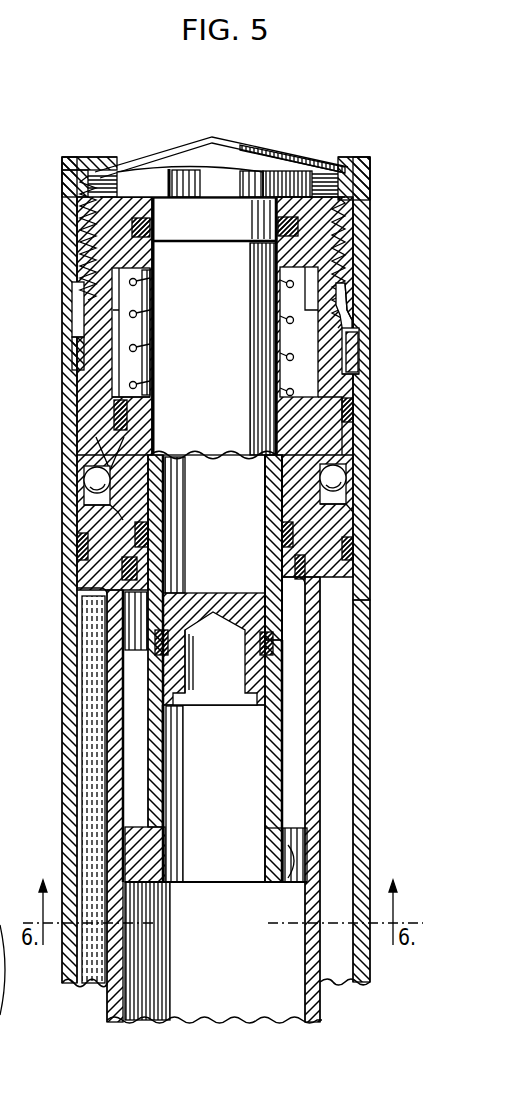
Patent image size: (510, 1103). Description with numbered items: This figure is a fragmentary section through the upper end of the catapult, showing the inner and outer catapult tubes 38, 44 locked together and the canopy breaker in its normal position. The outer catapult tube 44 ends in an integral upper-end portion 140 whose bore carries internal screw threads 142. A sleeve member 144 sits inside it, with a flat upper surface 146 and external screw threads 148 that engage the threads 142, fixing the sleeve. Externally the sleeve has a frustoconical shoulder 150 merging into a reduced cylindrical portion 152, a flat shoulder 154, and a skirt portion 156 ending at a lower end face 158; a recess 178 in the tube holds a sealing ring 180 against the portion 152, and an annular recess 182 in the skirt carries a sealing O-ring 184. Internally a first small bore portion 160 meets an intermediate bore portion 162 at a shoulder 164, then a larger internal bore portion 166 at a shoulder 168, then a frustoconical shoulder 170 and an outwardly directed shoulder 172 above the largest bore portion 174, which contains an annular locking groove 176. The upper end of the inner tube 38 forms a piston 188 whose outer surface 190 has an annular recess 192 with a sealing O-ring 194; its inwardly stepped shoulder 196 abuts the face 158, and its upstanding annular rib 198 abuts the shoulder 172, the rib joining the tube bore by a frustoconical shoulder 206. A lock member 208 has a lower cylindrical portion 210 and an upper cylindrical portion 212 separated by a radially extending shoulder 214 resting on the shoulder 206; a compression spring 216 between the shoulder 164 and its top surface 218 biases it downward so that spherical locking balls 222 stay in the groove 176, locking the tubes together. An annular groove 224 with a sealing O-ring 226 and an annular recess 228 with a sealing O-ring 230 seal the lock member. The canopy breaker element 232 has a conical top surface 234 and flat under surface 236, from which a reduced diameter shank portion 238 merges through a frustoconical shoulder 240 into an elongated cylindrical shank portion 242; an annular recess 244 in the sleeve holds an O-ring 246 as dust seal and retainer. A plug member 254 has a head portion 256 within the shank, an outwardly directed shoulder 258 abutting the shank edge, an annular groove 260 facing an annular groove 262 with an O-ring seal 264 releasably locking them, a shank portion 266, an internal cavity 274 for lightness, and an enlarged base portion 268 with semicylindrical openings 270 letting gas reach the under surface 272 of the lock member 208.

The canopy breaker element 232 is at (192, 130).
The conical top surface 234 is at (235, 141).
The flat under surface 236 is at (177, 200).
The internal screw threads 142 is at (105, 174).
The first small bore portion 160 is at (287, 200).
The flat upper surface 146 is at (327, 197).
The external screw threads 148 is at (332, 218).
The annular recess 244 is at (299, 228).
The upper-end portion 140 is at (356, 243).
The outwardly directed shoulder 164 is at (300, 283).
The frustoconical shoulder 150 is at (346, 308).
The cylindrical portion 152 is at (349, 331).
The sealing ring 180 is at (352, 347).
The recess 178 is at (352, 372).
The annular recess 182 is at (350, 397).
The sealing O-ring 184 is at (345, 413).
The outwardly directed shoulder 172 is at (346, 449).
The bore portion 174 is at (347, 478).
The spherical locking balls 222 is at (338, 483).
The upstanding annular rib 198 is at (346, 509).
The outer surface 190 is at (348, 534).
The piston 188 is at (348, 572).
The under surface 272 is at (300, 596).
The outer catapult tube 44 is at (363, 707).
The inner catapult tube 38 is at (315, 775).
The O-ring 246 is at (134, 224).
The sleeve member 144 is at (106, 250).
The flat shoulder 154 is at (78, 380).
The frustoconical shoulder 170 is at (100, 437).
The skirt portion 156 is at (93, 463).
The annular locking groove 176 is at (85, 468).
The inwardly stepped shoulder 196 is at (100, 494).
The lower end face 158 is at (100, 515).
The sealing O-ring 194 is at (76, 544).
The annular recess 192 is at (122, 566).
The sealing O-ring 226 is at (117, 583).
The lock member 208 is at (118, 619).
The annular groove 262 is at (156, 643).
The intermediate bore portion 162 is at (138, 292).
The compression spring 216 is at (139, 344).
The top surface 218 is at (131, 380).
The upper cylindrical portion 212 is at (122, 412).
The sealing O-ring 230 is at (137, 408).
The annular recess 228 is at (107, 440).
The shoulder 168 is at (279, 318).
The larger internal bore portion 166 is at (280, 336).
The reduced diameter shank portion 238 is at (200, 224).
The frustoconical shoulder 240 is at (198, 242).
The radially extending shoulder 214 is at (113, 512).
The lower cylindrical portion 210 is at (160, 547).
The annular groove 224 is at (137, 560).
The elongated cylindrical shank portion 242 is at (270, 477).
The frustoconical shoulder 206 is at (300, 518).
The head portion 256 is at (238, 597).
The annular groove 260 is at (190, 645).
The O-ring seal 264 is at (186, 640).
The outwardly directed shoulder 258 is at (267, 693).
The shank portion 266 is at (270, 773).
The internal cavity 274 is at (265, 830).
The enlarged base portion 268 is at (140, 862).
The plug member 254 is at (233, 868).
The semicylindrical openings 270 is at (287, 884).